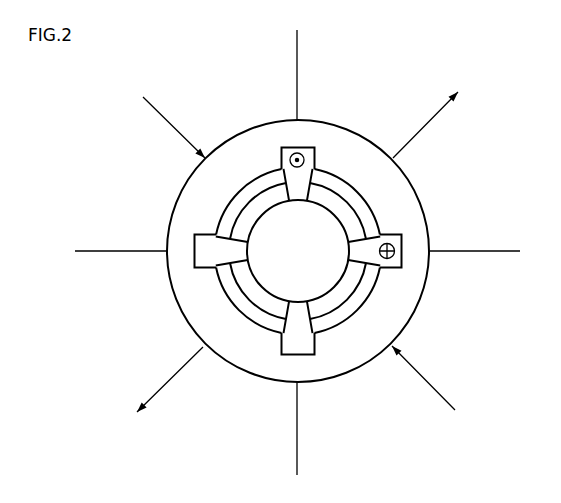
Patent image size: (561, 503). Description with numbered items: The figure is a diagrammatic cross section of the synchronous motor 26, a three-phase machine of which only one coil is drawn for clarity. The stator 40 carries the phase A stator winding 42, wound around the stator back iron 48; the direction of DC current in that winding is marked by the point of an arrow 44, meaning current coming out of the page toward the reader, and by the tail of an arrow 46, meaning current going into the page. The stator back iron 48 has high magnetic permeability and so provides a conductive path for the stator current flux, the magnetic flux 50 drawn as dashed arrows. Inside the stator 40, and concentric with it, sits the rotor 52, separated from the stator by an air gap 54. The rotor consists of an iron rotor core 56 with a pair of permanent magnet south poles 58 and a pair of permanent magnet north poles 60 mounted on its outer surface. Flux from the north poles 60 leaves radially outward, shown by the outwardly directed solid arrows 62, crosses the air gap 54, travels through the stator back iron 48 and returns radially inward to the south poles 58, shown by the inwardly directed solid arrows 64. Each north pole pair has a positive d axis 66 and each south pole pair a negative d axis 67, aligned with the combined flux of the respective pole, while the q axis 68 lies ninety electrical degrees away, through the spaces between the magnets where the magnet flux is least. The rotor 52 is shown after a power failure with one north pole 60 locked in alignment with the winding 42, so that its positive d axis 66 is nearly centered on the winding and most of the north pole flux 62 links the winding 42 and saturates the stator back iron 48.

The synchronous motor 26 is at (100, 138).
The stator 40 is at (168, 208).
The phase A stator winding 42 is at (290, 160).
The arrow point 44 is at (330, 178).
The arrow tail 46 is at (401, 242).
The stator back iron 48 is at (375, 204).
The magnetic flux 50 is at (372, 177).
The rotor 52 is at (246, 297).
The air gap 54 is at (227, 288).
The iron rotor core 56 is at (288, 259).
The permanent magnet south poles 58 is at (252, 215).
The permanent magnet north poles 60 is at (343, 231).
The outwardly directed solid arrows 62 is at (351, 197).
The inwardly directed solid arrows 64 is at (270, 192).
The positive d axis 66 is at (443, 107).
The negative d axis 67 is at (152, 100).
The q axis 68 is at (298, 58).